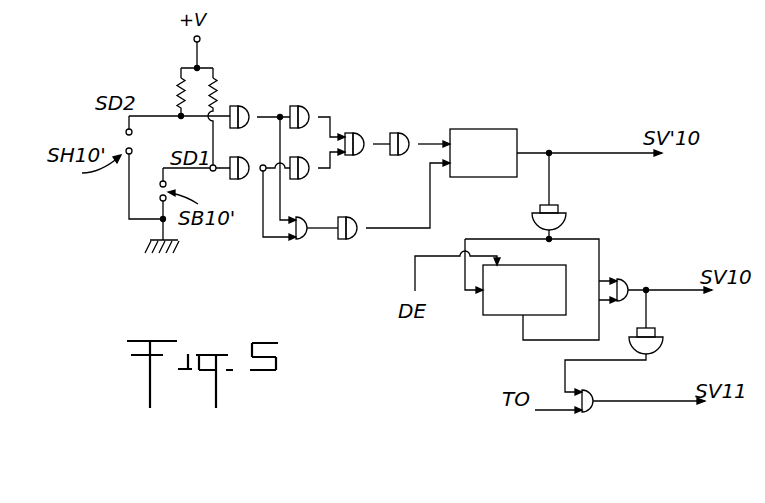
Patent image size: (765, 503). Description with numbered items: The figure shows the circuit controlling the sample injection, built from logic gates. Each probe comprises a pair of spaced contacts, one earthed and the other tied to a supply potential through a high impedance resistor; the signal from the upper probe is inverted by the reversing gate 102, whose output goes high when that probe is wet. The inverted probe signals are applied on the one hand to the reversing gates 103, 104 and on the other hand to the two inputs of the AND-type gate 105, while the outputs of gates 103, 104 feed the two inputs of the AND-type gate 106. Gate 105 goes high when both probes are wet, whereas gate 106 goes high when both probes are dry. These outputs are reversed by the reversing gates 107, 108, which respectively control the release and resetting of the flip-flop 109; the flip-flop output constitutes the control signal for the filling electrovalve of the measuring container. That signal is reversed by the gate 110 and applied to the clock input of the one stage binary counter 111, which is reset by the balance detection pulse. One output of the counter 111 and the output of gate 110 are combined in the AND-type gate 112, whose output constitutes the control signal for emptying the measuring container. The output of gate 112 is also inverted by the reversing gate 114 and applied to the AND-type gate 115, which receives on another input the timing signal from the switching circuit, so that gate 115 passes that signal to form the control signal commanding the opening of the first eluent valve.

The reversing gate 102 is at (248, 110).
The reversing gate 103 is at (316, 177).
The reversing gate 104 is at (308, 110).
The AND-type gate 105 is at (302, 239).
The AND-type gate 106 is at (356, 132).
The reversing gate 107 is at (356, 224).
The reversing gate 108 is at (410, 132).
The flip-flop 109 is at (483, 138).
The gate 110 is at (567, 223).
The one stage binary counter 111 is at (517, 281).
The AND-type gate 112 is at (625, 277).
The reversing gate 114 is at (656, 347).
The AND-type gate 115 is at (592, 391).